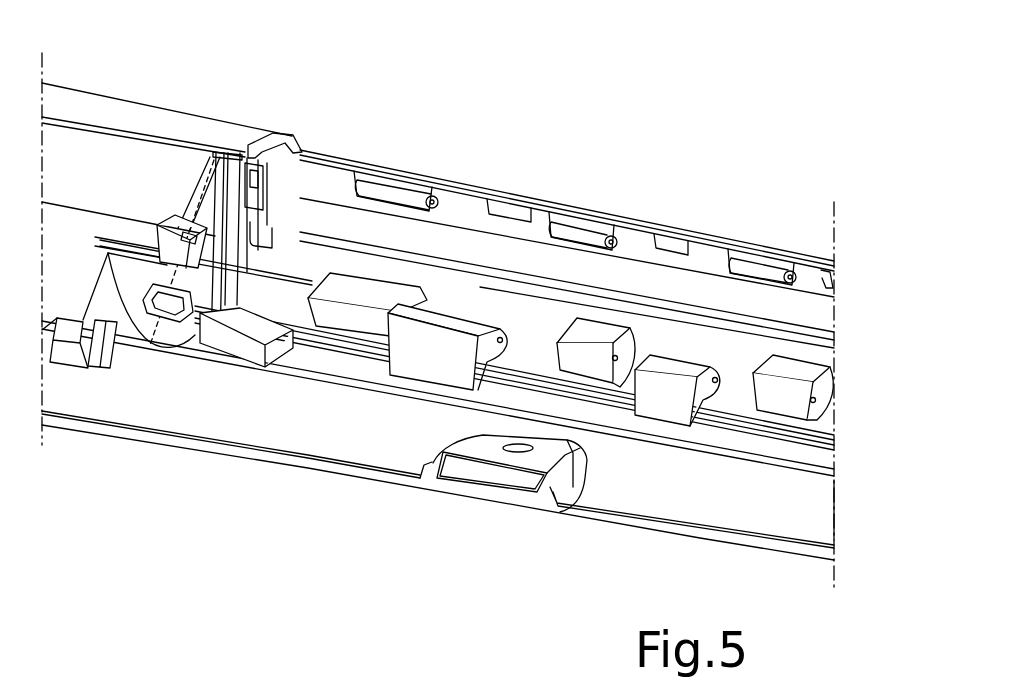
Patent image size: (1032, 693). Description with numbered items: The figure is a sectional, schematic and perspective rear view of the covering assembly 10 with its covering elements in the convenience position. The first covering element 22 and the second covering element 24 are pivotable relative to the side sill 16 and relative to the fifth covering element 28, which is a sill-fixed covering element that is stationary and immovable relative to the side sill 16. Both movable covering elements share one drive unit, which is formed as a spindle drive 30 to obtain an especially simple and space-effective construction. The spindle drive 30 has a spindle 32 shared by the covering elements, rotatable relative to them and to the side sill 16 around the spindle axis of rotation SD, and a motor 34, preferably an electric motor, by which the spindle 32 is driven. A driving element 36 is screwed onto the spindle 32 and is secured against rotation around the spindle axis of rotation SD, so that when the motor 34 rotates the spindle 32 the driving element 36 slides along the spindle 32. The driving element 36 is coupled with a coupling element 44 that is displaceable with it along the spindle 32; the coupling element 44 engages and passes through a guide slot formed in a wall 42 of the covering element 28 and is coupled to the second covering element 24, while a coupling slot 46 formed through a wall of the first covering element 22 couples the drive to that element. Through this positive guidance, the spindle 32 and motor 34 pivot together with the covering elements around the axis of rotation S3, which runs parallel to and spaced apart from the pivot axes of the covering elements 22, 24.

The covering assembly 10 is at (106, 87).
The side sill 16 is at (834, 506).
The first covering element 22 is at (507, 200).
The second covering element 24 is at (696, 287).
The fifth covering element 28 is at (625, 483).
The spindle drive 30 is at (117, 378).
The spindle 32 is at (205, 222).
The motor 34 is at (88, 372).
The driving element 36 is at (235, 345).
The wall 42 is at (193, 345).
The coupling element 44 is at (283, 325).
The coupling slot 46 is at (305, 150).
The spindle axis of rotation SD is at (108, 255).
The axis of rotation S3 is at (213, 227).